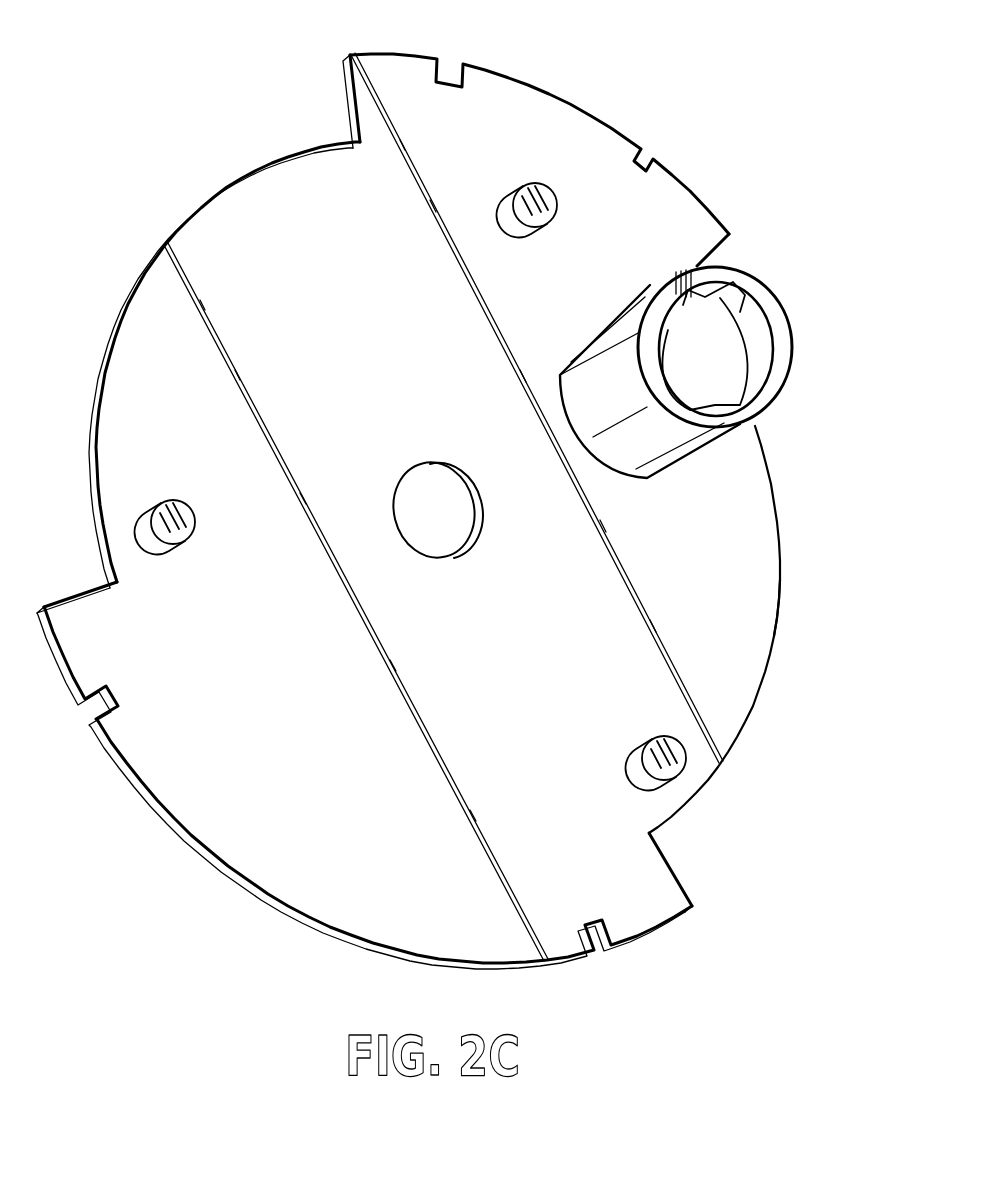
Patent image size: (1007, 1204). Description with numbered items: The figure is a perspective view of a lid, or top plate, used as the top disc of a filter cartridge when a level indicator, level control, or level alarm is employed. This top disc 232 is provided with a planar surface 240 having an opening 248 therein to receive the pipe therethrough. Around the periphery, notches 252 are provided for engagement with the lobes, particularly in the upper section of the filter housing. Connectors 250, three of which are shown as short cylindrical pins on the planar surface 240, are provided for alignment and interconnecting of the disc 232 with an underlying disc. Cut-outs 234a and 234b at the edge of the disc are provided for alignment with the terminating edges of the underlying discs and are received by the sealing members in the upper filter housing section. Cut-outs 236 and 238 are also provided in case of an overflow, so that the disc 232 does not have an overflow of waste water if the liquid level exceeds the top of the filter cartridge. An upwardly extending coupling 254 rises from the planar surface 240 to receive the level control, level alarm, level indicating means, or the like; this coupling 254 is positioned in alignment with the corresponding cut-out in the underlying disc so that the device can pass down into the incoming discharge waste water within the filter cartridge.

The disc 232 is at (455, 494).
The cut-out 234a is at (98, 712).
The cut-out 234b is at (599, 940).
The cut-out 236 is at (150, 258).
The cut-out 238 is at (781, 628).
The planar surface 240 is at (507, 639).
The opening 248 is at (427, 498).
The connectors 250 is at (546, 194).
The notches 252 is at (447, 72).
The upwardly extending coupling 254 is at (787, 328).